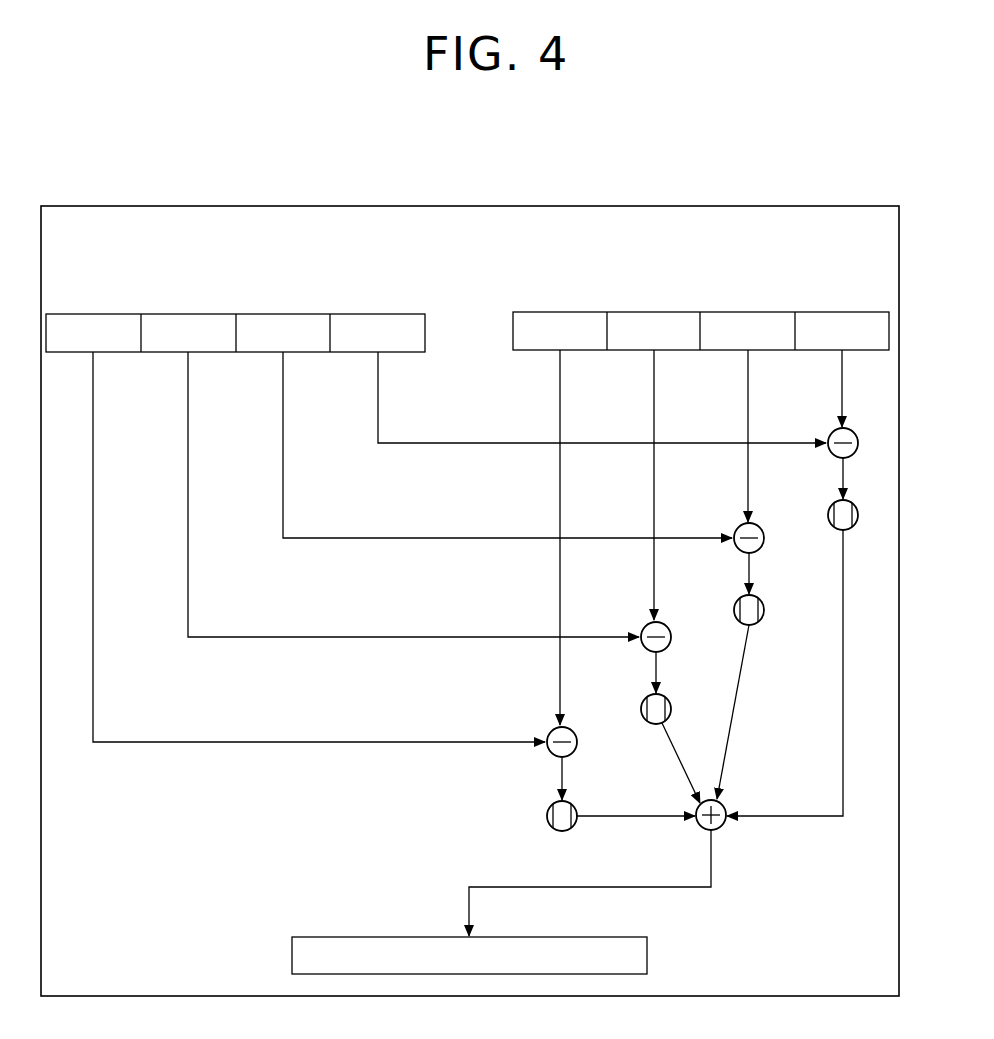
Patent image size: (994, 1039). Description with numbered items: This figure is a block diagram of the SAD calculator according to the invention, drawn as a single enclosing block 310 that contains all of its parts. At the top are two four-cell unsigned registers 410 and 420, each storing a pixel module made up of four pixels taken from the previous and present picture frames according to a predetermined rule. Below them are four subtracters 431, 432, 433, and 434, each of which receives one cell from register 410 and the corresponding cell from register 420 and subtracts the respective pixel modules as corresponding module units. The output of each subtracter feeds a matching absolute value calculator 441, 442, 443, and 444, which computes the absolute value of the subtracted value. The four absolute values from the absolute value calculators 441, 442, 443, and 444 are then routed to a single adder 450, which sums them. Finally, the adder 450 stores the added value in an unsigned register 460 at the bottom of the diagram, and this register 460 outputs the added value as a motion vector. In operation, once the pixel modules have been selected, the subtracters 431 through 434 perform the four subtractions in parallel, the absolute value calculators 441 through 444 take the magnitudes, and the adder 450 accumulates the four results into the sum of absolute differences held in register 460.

The saturation operation unit 310 is at (592, 206).
The register 410 is at (203, 312).
The register 420 is at (652, 312).
The subtracter 431 is at (830, 432).
The subtracter 432 is at (735, 527).
The subtracter 433 is at (641, 625).
The subtracter 434 is at (548, 730).
The absolute value calculator 441 is at (830, 505).
The absolute value calculator 442 is at (735, 600).
The absolute value calculator 443 is at (641, 698).
The absolute value calculator 444 is at (548, 804).
The adder 450 is at (726, 825).
The register 460 is at (649, 953).